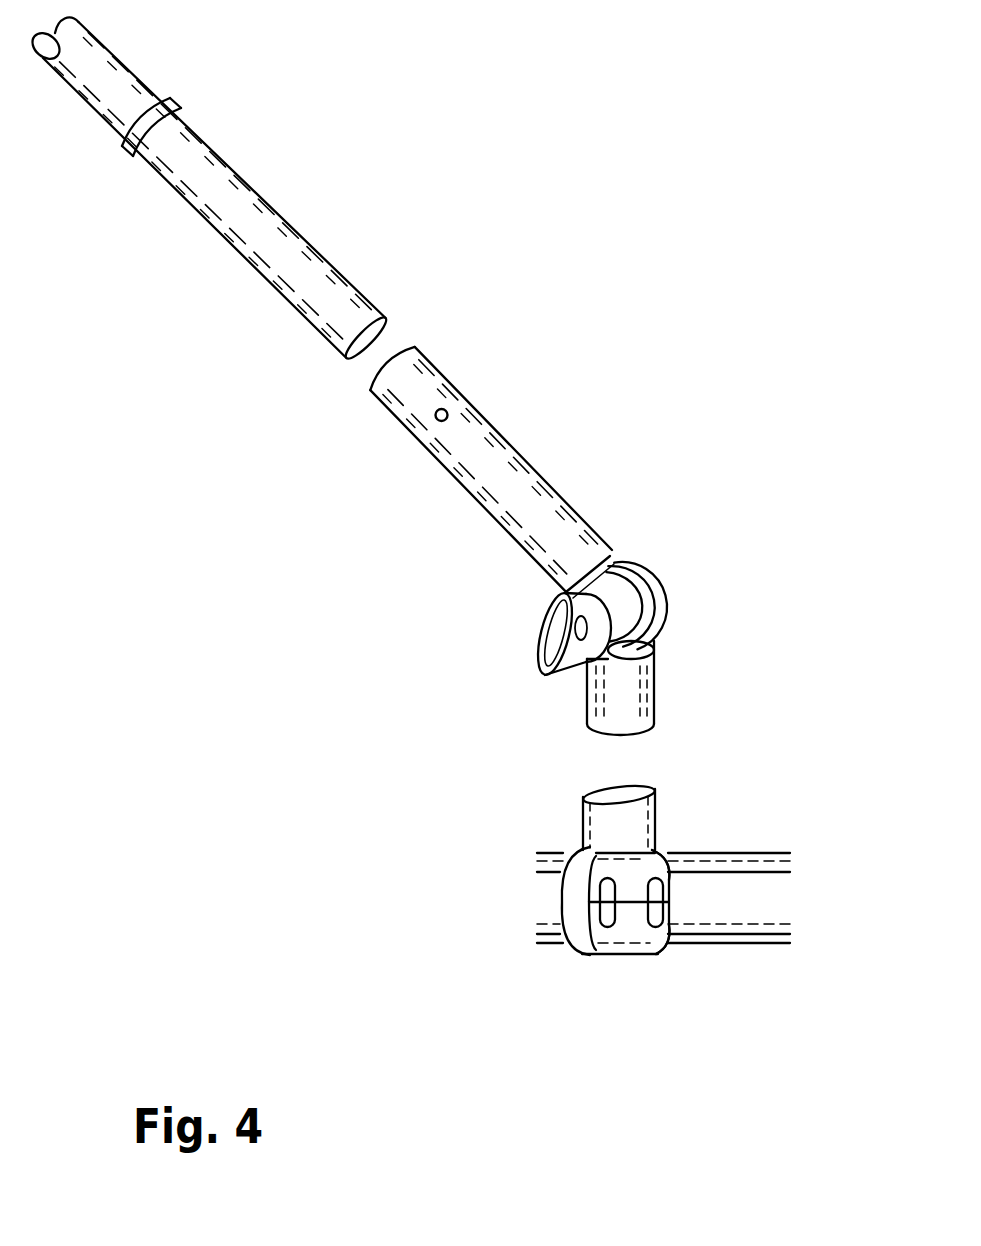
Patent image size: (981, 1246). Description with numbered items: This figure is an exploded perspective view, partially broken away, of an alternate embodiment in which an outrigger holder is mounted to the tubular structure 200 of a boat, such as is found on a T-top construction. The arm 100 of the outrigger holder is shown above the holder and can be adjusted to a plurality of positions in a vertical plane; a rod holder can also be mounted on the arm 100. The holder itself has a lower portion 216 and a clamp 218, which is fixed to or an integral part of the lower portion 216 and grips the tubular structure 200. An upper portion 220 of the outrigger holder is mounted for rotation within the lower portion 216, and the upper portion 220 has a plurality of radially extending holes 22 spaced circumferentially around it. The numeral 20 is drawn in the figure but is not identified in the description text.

The arm 100 is at (478, 407).
The tubular structure 200 is at (728, 945).
The lower portion of the outrigger holder 216 is at (580, 817).
The clamp 218 is at (613, 957).
The upper portion of the outrigger holder 220 is at (583, 700).
The upper tab 20 is at (663, 867).
The radially extending holes 22 is at (667, 940).